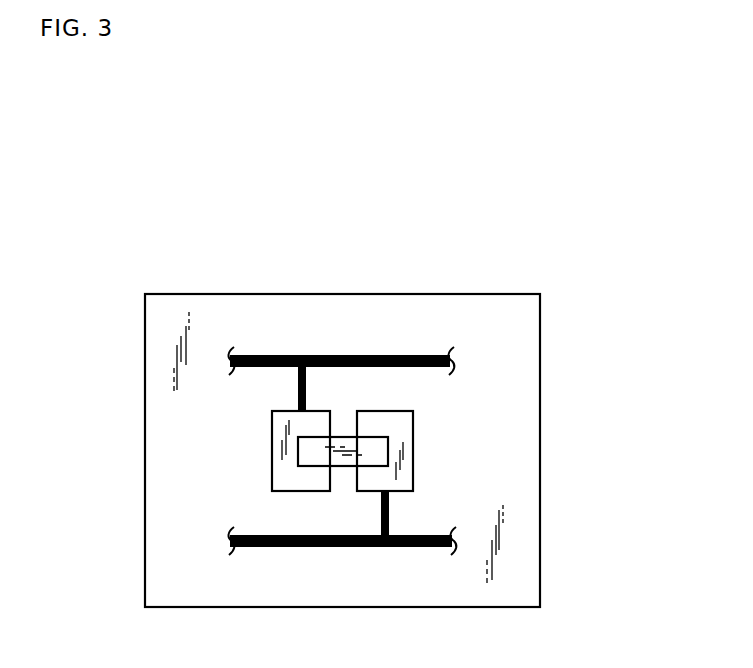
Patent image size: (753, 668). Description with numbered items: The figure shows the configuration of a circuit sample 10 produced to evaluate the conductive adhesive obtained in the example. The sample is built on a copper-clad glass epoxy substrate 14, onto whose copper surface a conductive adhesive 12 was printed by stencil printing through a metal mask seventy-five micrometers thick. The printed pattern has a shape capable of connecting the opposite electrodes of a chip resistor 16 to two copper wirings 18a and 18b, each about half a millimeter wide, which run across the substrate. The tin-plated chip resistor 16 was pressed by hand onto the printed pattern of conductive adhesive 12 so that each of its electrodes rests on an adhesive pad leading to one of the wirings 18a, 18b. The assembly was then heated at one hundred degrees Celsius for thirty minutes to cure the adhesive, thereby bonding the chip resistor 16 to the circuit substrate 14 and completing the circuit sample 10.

The circuit sample 10 is at (465, 258).
The conductive adhesive 12 is at (292, 484).
The copper-clad glass epoxy substrate 14 is at (517, 480).
The chip resistor 16 is at (372, 442).
The copper wiring 18a is at (298, 389).
The copper wiring 18b is at (389, 512).